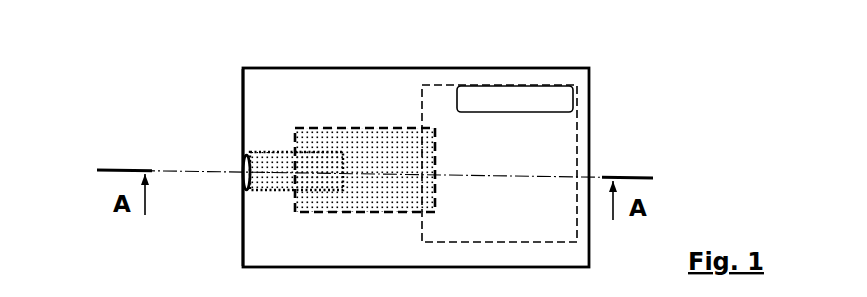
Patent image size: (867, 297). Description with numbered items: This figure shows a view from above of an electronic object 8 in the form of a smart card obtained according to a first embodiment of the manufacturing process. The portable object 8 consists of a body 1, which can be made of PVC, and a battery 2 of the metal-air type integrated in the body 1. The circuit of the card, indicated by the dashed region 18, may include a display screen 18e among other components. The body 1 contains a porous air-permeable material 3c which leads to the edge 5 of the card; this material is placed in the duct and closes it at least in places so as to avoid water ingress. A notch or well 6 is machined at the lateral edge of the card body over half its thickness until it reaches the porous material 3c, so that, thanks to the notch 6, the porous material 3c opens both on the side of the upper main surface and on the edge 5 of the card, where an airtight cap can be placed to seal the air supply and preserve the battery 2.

The body 1 is at (285, 97).
The battery 2 is at (357, 127).
The porous air-permeable material 3c is at (277, 192).
The edge 5 is at (242, 126).
The notch or well 6 is at (244, 155).
The electronic object 8 is at (520, 50).
The electronics compartment 18 is at (578, 158).
The display screen 18e is at (559, 97).